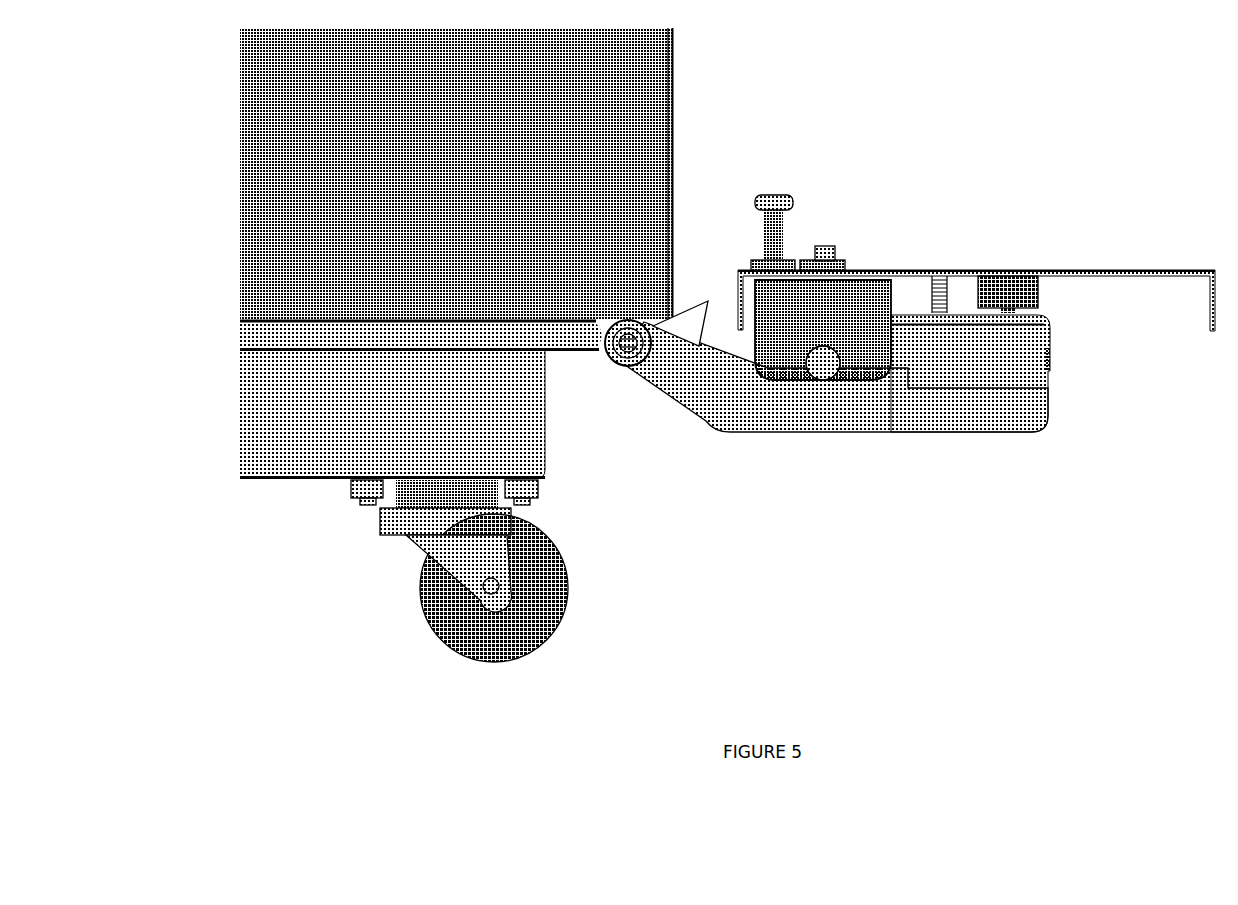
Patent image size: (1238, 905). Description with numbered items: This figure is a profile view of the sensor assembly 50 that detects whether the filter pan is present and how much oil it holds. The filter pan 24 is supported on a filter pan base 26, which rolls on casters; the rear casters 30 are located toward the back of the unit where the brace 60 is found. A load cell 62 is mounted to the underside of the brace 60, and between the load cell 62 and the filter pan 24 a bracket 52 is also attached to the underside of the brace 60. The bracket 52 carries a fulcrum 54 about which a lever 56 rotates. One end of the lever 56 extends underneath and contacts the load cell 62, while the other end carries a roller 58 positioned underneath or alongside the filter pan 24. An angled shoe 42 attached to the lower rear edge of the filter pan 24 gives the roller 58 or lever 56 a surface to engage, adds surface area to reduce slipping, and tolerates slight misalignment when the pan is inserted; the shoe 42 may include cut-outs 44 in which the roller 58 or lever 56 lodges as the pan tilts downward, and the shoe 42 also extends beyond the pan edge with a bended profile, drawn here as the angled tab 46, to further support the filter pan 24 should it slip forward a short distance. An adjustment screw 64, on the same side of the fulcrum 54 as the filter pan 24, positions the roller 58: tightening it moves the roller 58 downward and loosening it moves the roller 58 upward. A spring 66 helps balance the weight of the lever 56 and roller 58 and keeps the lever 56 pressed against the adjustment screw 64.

The filter pan 24 is at (391, 200).
The filter pan base 26 is at (363, 410).
The rear casters 30 is at (415, 603).
The shoe 42 is at (700, 293).
The cut-outs 44 is at (622, 342).
The flange 46 is at (673, 290).
The sensor assembly 50 is at (1047, 440).
The bracket 52 is at (863, 338).
The fulcrum 54 is at (813, 355).
The lever 56 is at (960, 386).
The roller 58 is at (620, 357).
The brace 60 is at (1102, 260).
The load cell 62 is at (1010, 285).
The adjustment screw 64 is at (768, 205).
The spring 66 is at (935, 287).